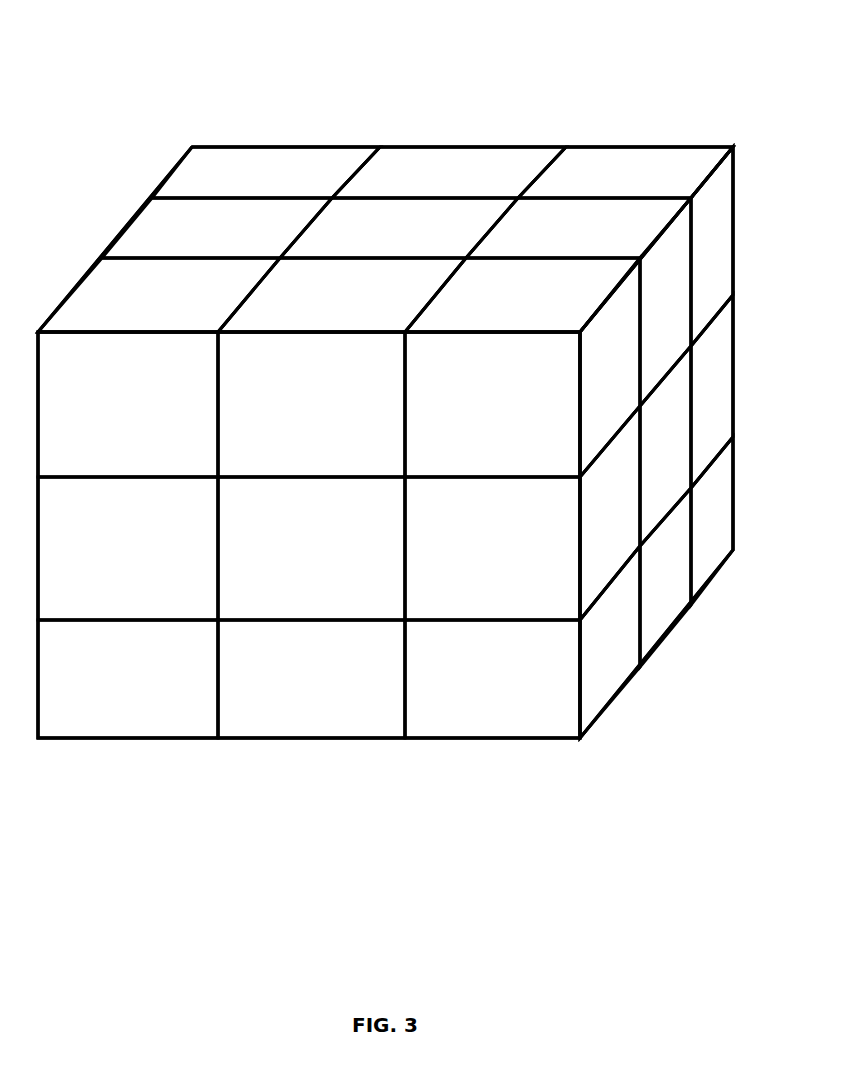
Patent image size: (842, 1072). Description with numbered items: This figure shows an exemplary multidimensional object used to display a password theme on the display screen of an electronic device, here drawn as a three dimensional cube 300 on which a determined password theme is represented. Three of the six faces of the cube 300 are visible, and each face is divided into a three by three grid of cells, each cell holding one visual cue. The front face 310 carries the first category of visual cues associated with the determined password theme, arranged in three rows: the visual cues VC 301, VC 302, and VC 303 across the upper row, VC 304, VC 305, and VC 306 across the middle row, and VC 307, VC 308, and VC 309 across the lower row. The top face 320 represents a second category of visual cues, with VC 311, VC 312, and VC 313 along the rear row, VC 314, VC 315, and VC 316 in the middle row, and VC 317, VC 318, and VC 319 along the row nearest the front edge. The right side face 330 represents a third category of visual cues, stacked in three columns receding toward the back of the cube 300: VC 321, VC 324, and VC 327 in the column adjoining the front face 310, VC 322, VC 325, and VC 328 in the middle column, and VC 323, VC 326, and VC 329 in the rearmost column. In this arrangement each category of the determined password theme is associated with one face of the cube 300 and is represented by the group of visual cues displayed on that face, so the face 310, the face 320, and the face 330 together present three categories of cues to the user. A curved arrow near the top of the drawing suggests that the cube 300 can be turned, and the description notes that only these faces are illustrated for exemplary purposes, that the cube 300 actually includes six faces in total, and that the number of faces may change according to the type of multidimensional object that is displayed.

The cube 300 is at (466, 82).
The face 310 is at (338, 717).
The face 320 is at (194, 172).
The face 330 is at (598, 690).
The visual cue 301 is at (128, 404).
The visual cue 302 is at (311, 404).
The visual cue 303 is at (492, 404).
The visual cue 304 is at (128, 548).
The visual cue 305 is at (311, 548).
The visual cue 306 is at (492, 548).
The visual cue 307 is at (128, 679).
The visual cue 308 is at (311, 679).
The visual cue 309 is at (492, 679).
The visual cue 311 is at (266, 172).
The visual cue 312 is at (449, 172).
The visual cue 313 is at (625, 172).
The visual cue 314 is at (217, 228).
The visual cue 315 is at (399, 228).
The visual cue 316 is at (578, 228).
The visual cue 317 is at (159, 295).
The visual cue 318 is at (342, 295).
The visual cue 319 is at (522, 295).
The visual cue 321 is at (610, 367).
The visual cue 322 is at (665, 302).
The visual cue 323 is at (712, 246).
The visual cue 324 is at (610, 513).
The visual cue 325 is at (665, 446).
The visual cue 326 is at (712, 391).
The visual cue 327 is at (610, 642).
The visual cue 328 is at (665, 577).
The visual cue 329 is at (712, 521).